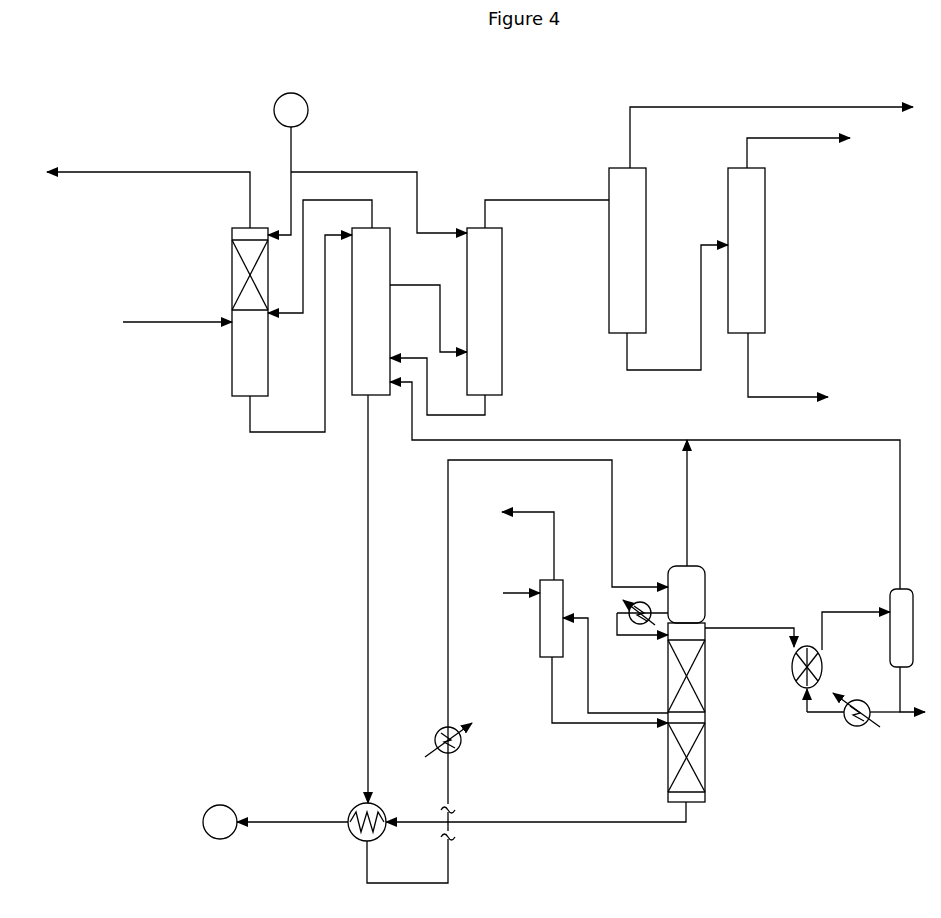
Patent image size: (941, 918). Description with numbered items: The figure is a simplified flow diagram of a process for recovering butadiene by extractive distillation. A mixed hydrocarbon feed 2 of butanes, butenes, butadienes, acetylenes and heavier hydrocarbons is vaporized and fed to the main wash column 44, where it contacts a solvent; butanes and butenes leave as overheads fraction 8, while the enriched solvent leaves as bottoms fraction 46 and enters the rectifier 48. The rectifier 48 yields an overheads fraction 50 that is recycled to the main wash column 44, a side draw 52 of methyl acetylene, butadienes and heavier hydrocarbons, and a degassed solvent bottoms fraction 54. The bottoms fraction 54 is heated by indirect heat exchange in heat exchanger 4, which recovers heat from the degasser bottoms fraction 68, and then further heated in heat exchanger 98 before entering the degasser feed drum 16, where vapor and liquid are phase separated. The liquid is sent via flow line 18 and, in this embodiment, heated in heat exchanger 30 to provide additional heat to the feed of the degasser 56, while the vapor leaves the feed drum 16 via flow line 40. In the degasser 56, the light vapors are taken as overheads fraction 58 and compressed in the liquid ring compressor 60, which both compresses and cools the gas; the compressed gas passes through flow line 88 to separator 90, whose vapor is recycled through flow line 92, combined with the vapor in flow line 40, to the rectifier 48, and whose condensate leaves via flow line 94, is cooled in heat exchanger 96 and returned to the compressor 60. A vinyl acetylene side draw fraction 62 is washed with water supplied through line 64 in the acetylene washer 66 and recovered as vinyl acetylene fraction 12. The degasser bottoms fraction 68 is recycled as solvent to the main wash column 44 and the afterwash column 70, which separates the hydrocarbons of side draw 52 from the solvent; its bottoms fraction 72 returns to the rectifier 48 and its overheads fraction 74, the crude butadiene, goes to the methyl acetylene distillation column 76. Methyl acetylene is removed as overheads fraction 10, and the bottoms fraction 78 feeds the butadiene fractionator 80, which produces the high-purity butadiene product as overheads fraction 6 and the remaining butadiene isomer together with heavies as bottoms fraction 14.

The mixed hydrocarbon feed 2 is at (177, 309).
The heat exchanger 4 is at (357, 810).
The overheads fraction 6 is at (798, 141).
The overheads fraction 8 is at (148, 188).
The overheads fraction 10 is at (771, 125).
The vinyl acetylene fraction 12 is at (528, 533).
The bottoms fraction 14 is at (788, 365).
The degasser feed drum 16 is at (686, 684).
The flow line 18 is at (642, 639).
The heat exchanger 30 is at (632, 612).
The flow line 40 is at (701, 503).
The main wash column 44 is at (250, 312).
The bottoms fraction 46 is at (301, 333).
The rectifier 48 is at (371, 311).
The overheads fraction 50 is at (320, 256).
The side draw 52 is at (428, 306).
The bottoms fraction 54 is at (354, 599).
The degasser 56 is at (705, 705).
The overheads fraction 58 is at (749, 641).
The liquid ring compressor 60 is at (796, 679).
The side draw fraction 62 is at (610, 690).
The line 64 is at (521, 581).
The acetylene washer 66 is at (551, 618).
The bottoms fraction 68 is at (335, 466).
The afterwash column 70 is at (484, 311).
The bottoms fraction 72 is at (437, 386).
The overheads fraction 74 is at (547, 201).
The methyl acetylene distillation column 76 is at (627, 250).
The bottoms fraction 78 is at (677, 307).
The butadiene fractionator 80 is at (746, 250).
The flow line 88 is at (856, 619).
The separator 90 is at (901, 628).
The flow line 92 is at (645, 485).
The flow line 94 is at (913, 689).
The heat exchanger 96 is at (853, 724).
The heat exchanger 98 is at (442, 735).